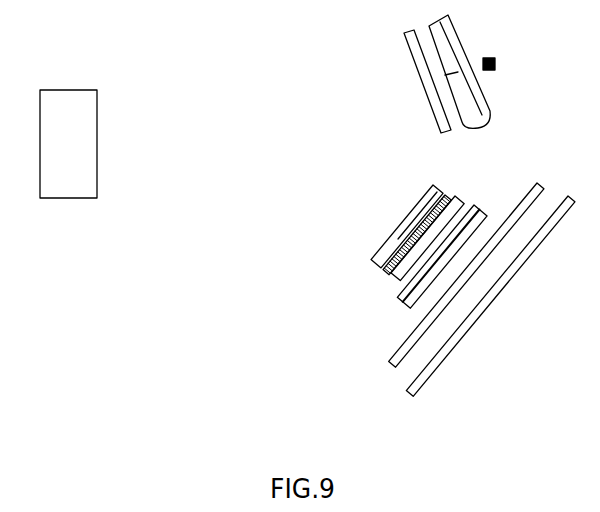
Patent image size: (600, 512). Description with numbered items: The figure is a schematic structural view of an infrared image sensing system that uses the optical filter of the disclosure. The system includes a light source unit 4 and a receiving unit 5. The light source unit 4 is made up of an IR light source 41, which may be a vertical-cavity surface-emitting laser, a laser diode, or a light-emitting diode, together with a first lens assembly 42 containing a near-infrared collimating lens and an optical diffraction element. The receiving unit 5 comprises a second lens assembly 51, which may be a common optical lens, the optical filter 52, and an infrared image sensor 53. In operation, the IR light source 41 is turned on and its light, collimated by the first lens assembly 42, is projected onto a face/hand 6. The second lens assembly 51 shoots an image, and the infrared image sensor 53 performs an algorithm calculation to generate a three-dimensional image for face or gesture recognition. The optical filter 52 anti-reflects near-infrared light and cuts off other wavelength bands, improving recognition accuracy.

The light source unit 4 is at (407, 80).
The IR light source 41 is at (496, 58).
The first lens assembly 42 is at (468, 113).
The receiving unit 5 is at (403, 299).
The second lens assembly 51 is at (407, 263).
The optical filter 52 is at (390, 358).
The infrared image sensor 53 is at (407, 393).
The face/hand 6 is at (73, 117).